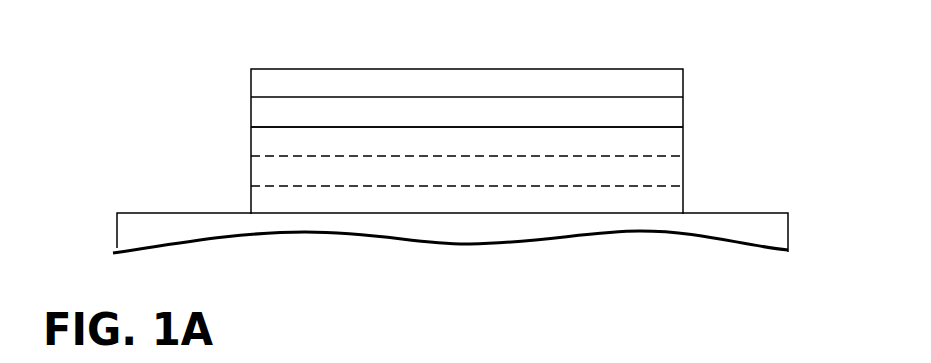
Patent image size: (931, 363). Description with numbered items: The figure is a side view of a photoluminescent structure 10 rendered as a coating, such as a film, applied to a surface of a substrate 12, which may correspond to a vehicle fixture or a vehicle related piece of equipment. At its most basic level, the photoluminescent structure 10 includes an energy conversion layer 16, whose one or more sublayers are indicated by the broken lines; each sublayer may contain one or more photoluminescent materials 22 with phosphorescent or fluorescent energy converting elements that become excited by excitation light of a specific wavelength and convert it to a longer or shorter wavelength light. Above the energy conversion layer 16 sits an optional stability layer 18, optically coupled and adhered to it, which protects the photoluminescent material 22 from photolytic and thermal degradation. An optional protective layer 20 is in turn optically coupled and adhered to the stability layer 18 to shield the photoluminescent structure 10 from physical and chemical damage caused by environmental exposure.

The photoluminescent structure 10 is at (616, 41).
The substrate 12 is at (728, 213).
The energy conversion layer 16 is at (251, 168).
The stability layer 18 is at (251, 112).
The protective layer 20 is at (347, 69).
The photoluminescent material 22 is at (634, 170).